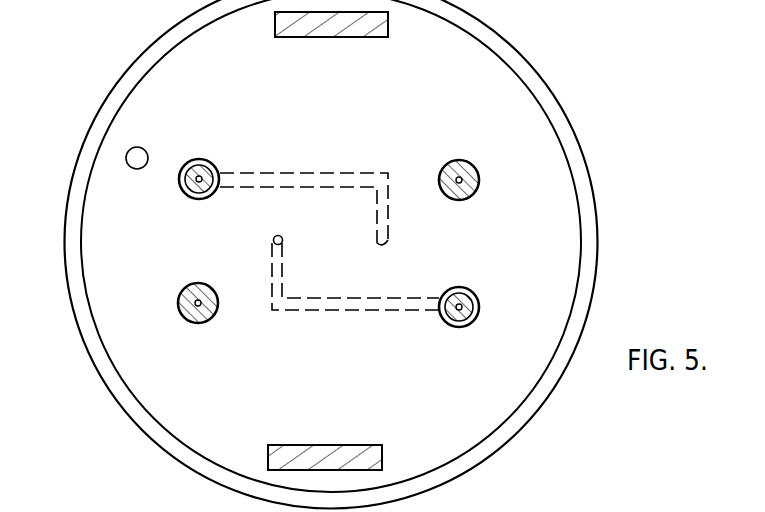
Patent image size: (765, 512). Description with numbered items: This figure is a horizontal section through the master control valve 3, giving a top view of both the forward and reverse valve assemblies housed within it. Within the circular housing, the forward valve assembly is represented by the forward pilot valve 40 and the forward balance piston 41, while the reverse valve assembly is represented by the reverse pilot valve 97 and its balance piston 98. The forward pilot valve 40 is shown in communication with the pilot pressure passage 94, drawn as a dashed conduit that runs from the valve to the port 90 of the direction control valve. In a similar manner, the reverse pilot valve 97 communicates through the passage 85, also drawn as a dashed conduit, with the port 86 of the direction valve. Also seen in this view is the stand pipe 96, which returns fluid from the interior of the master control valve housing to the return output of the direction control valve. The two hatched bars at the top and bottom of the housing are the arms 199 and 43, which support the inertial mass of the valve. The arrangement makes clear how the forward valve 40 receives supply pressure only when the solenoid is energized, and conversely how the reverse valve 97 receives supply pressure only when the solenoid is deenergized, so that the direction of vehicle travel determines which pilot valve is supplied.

The master control valve 3 is at (66, 177).
The arm 199 is at (375, 37).
The arm 43 is at (352, 448).
The stand pipe 96 is at (137, 169).
The reverse pilot valve 97 is at (208, 162).
The balance piston 98 is at (470, 172).
The forward balance piston 41 is at (203, 322).
The forward pilot valve 40 is at (477, 319).
The passage 85 is at (312, 177).
The port 86 is at (386, 246).
The port 90 is at (274, 239).
The pilot pressure passage 94 is at (397, 307).